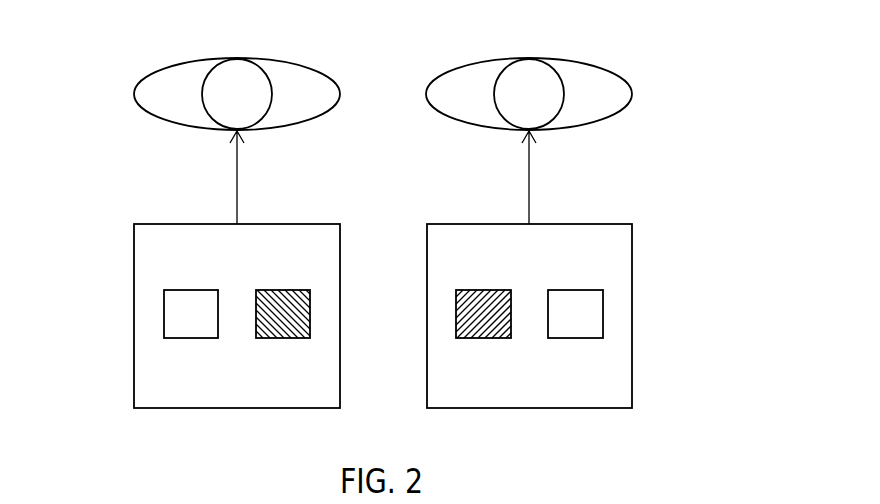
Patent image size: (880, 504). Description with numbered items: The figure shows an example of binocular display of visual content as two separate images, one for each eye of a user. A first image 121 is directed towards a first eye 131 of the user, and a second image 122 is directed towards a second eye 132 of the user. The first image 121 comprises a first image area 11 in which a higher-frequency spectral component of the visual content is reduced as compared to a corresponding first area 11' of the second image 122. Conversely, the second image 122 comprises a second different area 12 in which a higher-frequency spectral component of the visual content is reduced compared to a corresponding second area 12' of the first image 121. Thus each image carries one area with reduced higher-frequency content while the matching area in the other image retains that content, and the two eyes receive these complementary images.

The first eye 131 is at (133, 95).
The second eye 132 is at (632, 95).
The first image 121 is at (134, 296).
The second image 122 is at (632, 300).
The first image area 11 is at (283, 371).
The corresponding first area 11' is at (575, 371).
The second different area 12 is at (483, 371).
The corresponding second area 12' is at (191, 371).